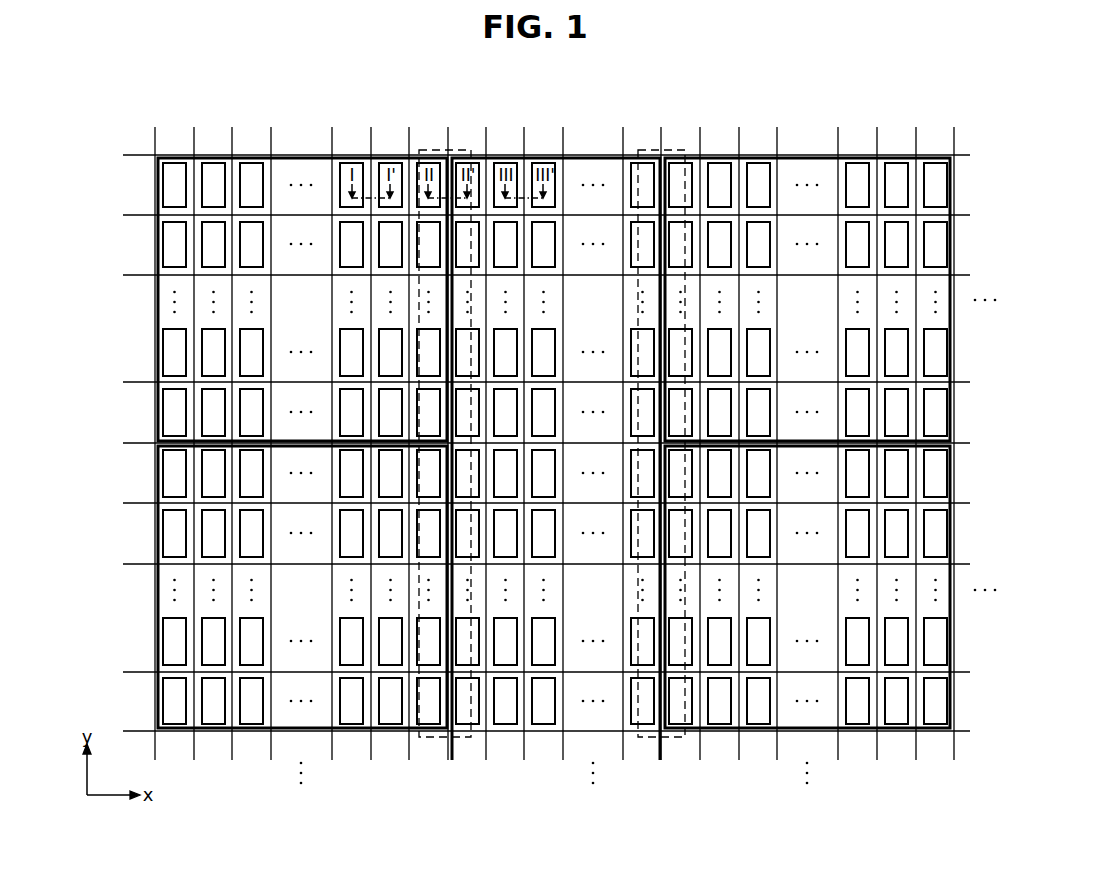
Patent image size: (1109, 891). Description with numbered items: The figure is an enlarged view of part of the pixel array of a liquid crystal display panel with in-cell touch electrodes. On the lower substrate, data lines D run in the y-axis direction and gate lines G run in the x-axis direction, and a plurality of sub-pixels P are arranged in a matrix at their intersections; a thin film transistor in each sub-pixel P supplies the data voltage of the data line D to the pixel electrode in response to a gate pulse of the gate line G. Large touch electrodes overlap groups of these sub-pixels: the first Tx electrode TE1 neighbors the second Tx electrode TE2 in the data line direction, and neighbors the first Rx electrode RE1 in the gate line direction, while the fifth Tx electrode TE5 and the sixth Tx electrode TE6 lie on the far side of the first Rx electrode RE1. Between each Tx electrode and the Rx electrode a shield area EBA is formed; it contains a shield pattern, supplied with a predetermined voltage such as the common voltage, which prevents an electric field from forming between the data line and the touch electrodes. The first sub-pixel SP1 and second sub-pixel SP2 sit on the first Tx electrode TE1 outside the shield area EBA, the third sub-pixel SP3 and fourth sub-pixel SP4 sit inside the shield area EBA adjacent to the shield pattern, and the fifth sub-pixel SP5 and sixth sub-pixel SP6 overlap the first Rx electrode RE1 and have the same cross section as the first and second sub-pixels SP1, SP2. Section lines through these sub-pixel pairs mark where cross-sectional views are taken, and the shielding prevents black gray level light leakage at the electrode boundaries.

The data line D is at (155, 432).
The gate line G is at (132, 215).
The sub-pixel P is at (173, 162).
The first sub-pixel SP1 is at (351, 161).
The second sub-pixel SP2 is at (389, 161).
The third sub-pixel SP3 is at (427, 161).
The fourth sub-pixel SP4 is at (466, 161).
The fifth sub-pixel SP5 is at (504, 161).
The sixth sub-pixel SP6 is at (542, 161).
The first Tx electrode TE1 is at (300, 156).
The second Tx electrode TE2 is at (158, 535).
The fifth Tx electrode TE5 is at (806, 156).
The sixth Tx electrode TE6 is at (859, 731).
The first Rx electrode RE1 is at (592, 153).
The shield area EBA is at (439, 150).